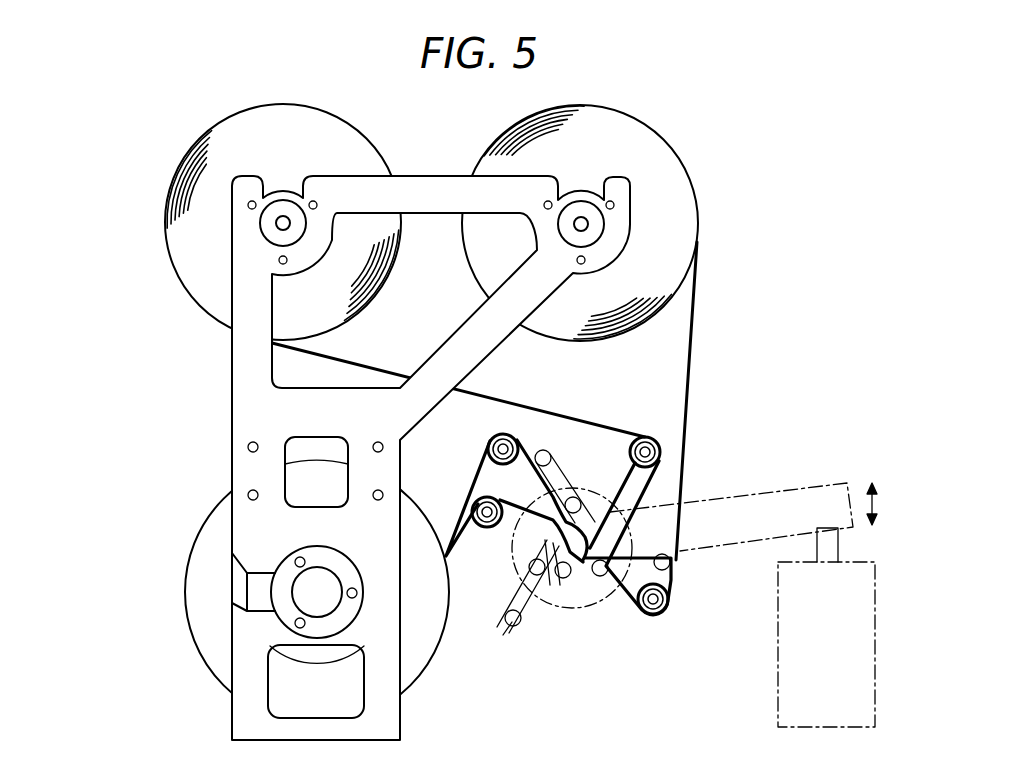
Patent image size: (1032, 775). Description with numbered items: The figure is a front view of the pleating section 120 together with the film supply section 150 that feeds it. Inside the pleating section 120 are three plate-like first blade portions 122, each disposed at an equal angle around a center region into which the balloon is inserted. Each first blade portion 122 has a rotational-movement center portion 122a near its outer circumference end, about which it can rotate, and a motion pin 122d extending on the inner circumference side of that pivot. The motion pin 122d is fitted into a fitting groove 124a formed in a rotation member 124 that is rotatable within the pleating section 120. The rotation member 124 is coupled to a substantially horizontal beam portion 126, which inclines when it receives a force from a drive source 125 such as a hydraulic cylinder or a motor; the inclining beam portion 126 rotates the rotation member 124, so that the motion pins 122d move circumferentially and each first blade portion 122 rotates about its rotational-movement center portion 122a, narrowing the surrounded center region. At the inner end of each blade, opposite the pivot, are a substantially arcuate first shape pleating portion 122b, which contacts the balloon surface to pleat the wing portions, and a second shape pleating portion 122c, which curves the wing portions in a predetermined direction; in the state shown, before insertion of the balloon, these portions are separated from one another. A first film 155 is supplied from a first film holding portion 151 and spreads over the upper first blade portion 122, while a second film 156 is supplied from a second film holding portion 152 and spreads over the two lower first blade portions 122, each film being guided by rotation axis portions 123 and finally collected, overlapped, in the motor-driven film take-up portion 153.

The film supply section 150 is at (152, 152).
The first film holding portion 151 is at (175, 273).
The second film holding portion 152 is at (675, 152).
The film take-up portion 153 is at (185, 592).
The first film 155 is at (594, 420).
The second film 156 is at (694, 318).
The pleating section 120 is at (773, 401).
The first blade portion 122 is at (600, 470).
The rotational-movement center portion 122a is at (548, 455).
The first shape pleating portion 122b is at (512, 575).
The second shape pleating portion 122c is at (558, 520).
The motion pin 122d is at (620, 493).
The rotation axis portion 123 is at (488, 449).
The rotation member 124 is at (537, 450).
The fitting groove 124a is at (527, 576).
The drive source 125 is at (797, 698).
The beam portion 126 is at (842, 483).